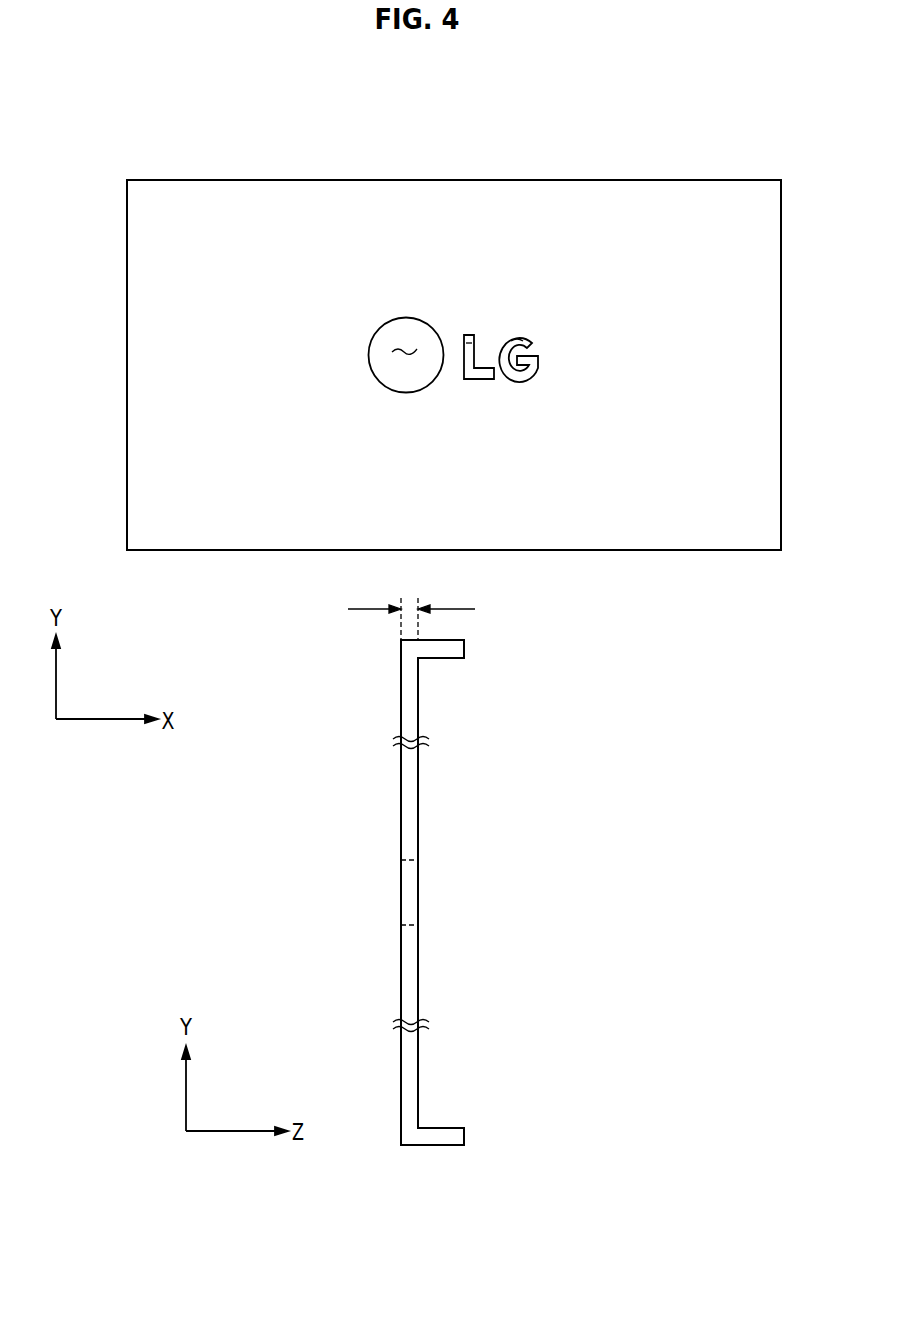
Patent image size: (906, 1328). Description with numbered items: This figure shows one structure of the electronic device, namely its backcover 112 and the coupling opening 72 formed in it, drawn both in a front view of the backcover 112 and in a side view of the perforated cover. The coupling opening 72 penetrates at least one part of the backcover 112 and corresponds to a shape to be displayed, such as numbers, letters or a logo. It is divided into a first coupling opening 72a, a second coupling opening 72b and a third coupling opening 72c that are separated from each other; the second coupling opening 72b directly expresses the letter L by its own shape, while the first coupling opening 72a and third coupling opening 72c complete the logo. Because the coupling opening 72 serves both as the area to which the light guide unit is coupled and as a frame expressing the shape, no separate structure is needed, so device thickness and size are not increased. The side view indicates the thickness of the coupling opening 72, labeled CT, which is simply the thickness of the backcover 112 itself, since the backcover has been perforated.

The backcover 112 is at (170, 150).
The coupling opening 72 is at (383, 111).
The first coupling opening 72a is at (403, 346).
The second coupling opening 72b is at (468, 341).
The third coupling opening 72c is at (517, 340).